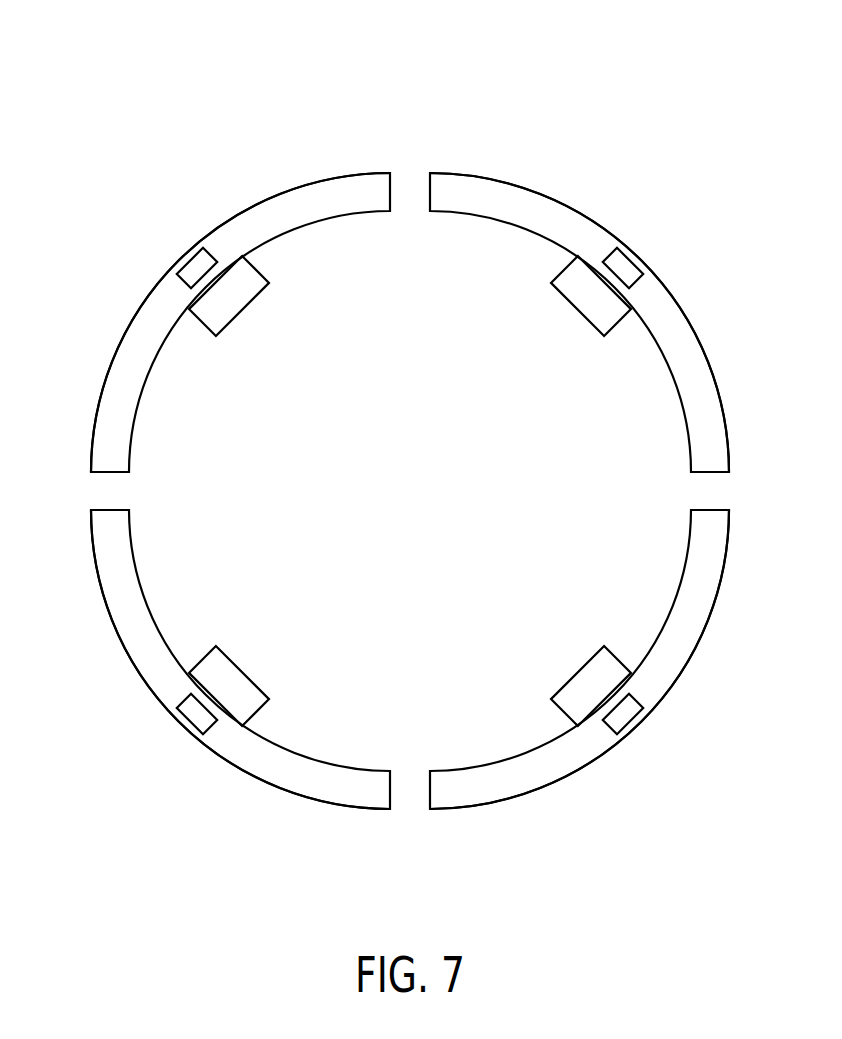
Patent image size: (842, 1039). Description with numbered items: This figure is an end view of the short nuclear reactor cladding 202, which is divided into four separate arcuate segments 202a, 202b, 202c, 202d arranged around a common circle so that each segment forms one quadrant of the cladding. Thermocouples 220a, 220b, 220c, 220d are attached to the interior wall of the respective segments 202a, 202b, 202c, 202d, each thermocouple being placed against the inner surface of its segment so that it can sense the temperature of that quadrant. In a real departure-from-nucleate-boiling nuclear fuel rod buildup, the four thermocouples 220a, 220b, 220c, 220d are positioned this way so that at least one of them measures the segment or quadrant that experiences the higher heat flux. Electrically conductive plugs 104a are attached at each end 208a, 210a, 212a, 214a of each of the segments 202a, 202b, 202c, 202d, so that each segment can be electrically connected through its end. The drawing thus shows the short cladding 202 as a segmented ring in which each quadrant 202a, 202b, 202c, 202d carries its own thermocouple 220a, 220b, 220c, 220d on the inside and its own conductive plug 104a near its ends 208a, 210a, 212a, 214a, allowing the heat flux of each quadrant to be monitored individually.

The short nuclear reactor cladding 202 is at (707, 98).
The segment 202a is at (123, 650).
The segment 202b is at (260, 200).
The segment 202c is at (560, 200).
The segment 202d is at (695, 650).
The electrically conductive plug 104a is at (193, 268).
The thermocouple 220a is at (230, 670).
The thermocouple 220b is at (230, 312).
The thermocouple 220c is at (588, 312).
The thermocouple 220d is at (590, 672).
The end 208a is at (272, 763).
The end 210a is at (150, 322).
The end 212a is at (668, 323).
The end 214a is at (545, 763).